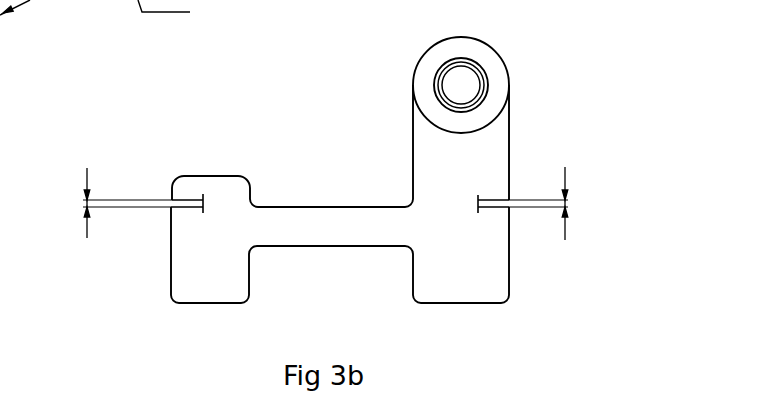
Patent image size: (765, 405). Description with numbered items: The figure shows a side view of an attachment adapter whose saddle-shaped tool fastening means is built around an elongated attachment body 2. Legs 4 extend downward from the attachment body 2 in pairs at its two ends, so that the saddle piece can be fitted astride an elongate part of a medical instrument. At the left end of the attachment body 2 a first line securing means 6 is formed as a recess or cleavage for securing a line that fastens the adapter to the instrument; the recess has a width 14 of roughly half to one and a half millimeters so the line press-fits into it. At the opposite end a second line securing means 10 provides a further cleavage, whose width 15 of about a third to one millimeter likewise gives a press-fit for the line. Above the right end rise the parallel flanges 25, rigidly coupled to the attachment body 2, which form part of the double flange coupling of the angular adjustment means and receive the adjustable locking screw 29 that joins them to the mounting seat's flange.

The attachment body 2 is at (285, 132).
The legs 4 is at (135, 355).
The first line securing means 6 is at (168, 200).
The second line securing means 10 is at (511, 208).
The width of line securing recess 14 is at (87, 204).
The width of cleavage of second line securing means 15 is at (565, 195).
The parallel flanges 25 is at (623, 100).
The adjustable locking screw 29 is at (466, 90).